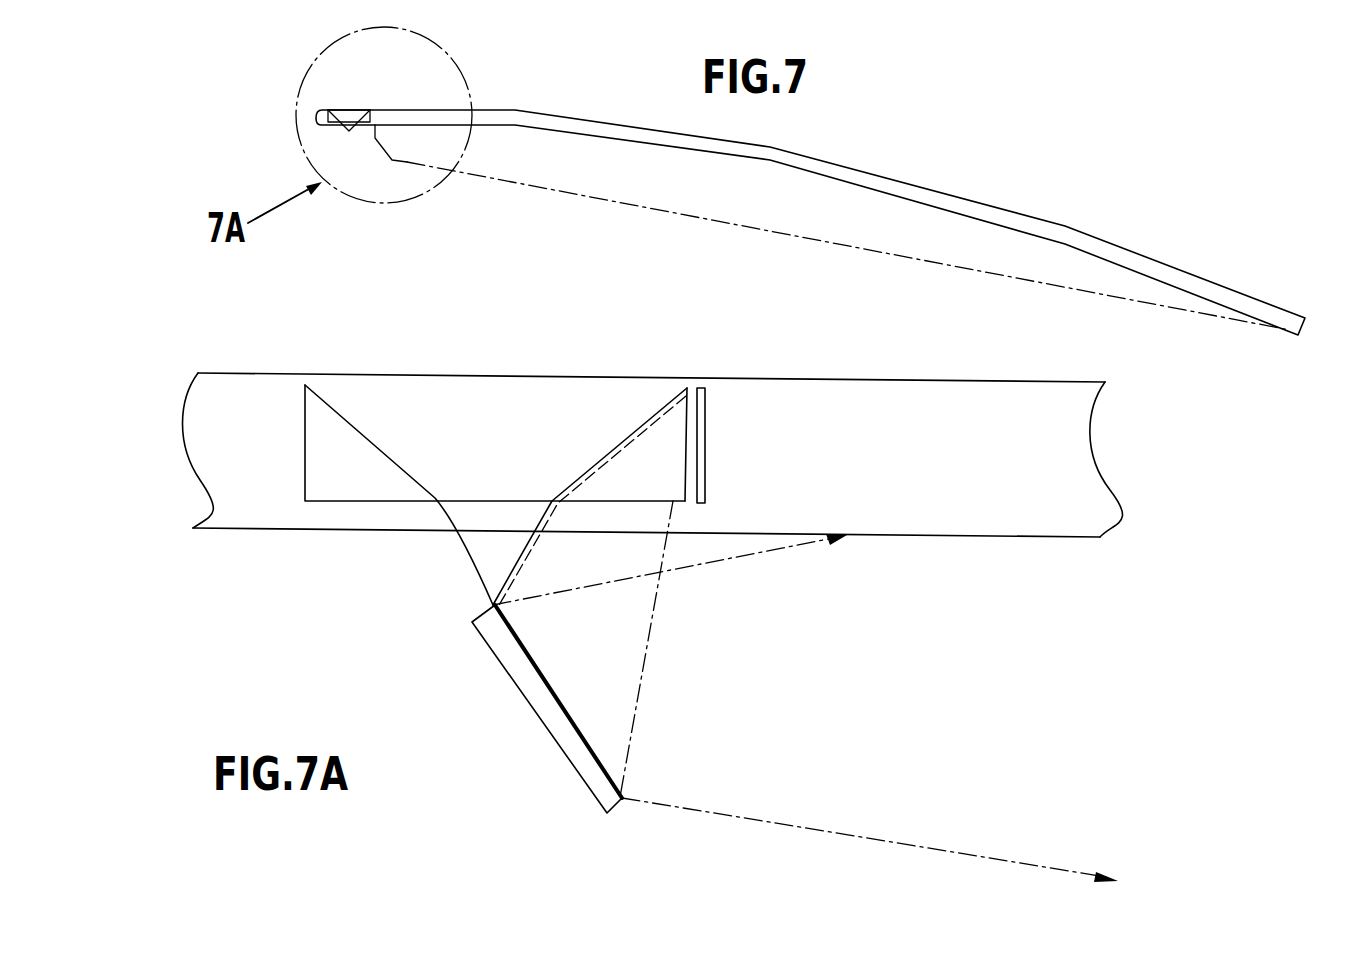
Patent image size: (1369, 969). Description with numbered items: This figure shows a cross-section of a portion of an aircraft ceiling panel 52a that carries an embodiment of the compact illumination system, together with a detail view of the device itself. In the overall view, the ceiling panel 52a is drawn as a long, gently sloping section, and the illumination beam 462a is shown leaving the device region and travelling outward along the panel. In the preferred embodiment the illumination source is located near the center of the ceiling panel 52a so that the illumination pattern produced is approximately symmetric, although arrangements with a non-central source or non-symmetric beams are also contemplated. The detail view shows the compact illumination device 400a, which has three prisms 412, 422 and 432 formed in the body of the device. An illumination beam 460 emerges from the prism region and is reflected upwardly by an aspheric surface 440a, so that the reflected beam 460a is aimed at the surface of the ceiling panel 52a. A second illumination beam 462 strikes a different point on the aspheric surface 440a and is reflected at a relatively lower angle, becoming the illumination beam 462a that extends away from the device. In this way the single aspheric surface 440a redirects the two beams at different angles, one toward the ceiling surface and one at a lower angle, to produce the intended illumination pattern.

In FIG. 7, the ceiling panel 52a is at (877, 172).
In FIG. 7, the illumination beam 462a is at (985, 275).
In FIG. 7A, the illumination beam 462a is at (828, 833).
In FIG. 7A, the compact illumination device 400a is at (415, 403).
In FIG. 7A, the prism 432 is at (355, 482).
In FIG. 7A, the prism 422 is at (666, 478).
In FIG. 7A, the prism 412 is at (468, 552).
In FIG. 7A, the illumination beam 460 is at (507, 587).
In FIG. 7A, the reflected beam 460a is at (725, 560).
In FIG. 7A, the second illumination beam 462 is at (640, 688).
In FIG. 7A, the aspheric surface 440a is at (547, 728).